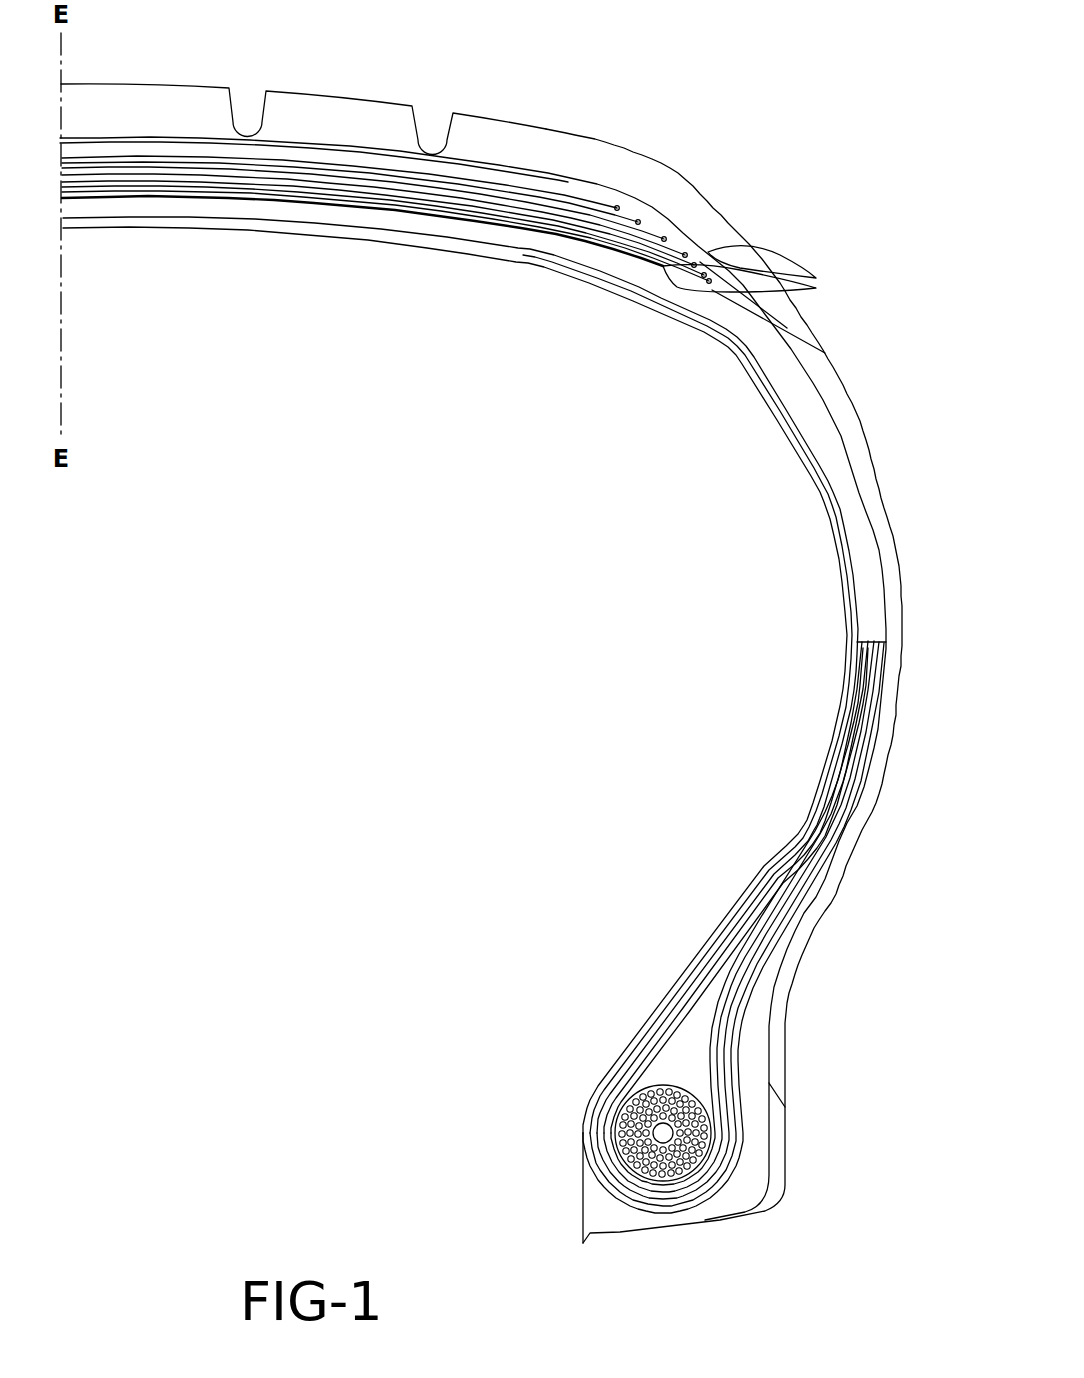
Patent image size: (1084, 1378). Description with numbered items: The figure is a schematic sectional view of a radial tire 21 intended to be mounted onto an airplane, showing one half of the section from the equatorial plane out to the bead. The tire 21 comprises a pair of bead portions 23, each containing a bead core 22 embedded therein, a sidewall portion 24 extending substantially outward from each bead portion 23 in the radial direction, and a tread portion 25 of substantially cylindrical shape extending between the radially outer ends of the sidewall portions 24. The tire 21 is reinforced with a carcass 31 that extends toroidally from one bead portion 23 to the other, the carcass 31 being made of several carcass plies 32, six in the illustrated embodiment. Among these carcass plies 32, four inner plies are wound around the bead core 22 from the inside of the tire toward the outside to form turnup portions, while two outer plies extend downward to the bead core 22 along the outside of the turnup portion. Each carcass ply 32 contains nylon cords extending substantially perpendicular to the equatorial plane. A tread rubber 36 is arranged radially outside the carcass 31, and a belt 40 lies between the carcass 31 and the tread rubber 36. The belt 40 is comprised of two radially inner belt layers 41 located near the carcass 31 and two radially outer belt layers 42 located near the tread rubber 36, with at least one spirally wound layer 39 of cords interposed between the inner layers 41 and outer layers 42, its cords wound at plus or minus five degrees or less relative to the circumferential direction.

The radial tire 21 is at (840, 380).
The bead core 22 is at (640, 1135).
The bead portion 23 is at (656, 1000).
The sidewall portion 24 is at (905, 580).
The tread portion 25 is at (493, 108).
The carcass 31 is at (731, 360).
The carcass ply 32 is at (457, 246).
The tread rubber 36 is at (370, 128).
The spirally wound layer 39 is at (690, 247).
The belt 40 is at (600, 188).
The radially inner belt layer 41 is at (816, 288).
The radially outer belt layer 42 is at (665, 237).